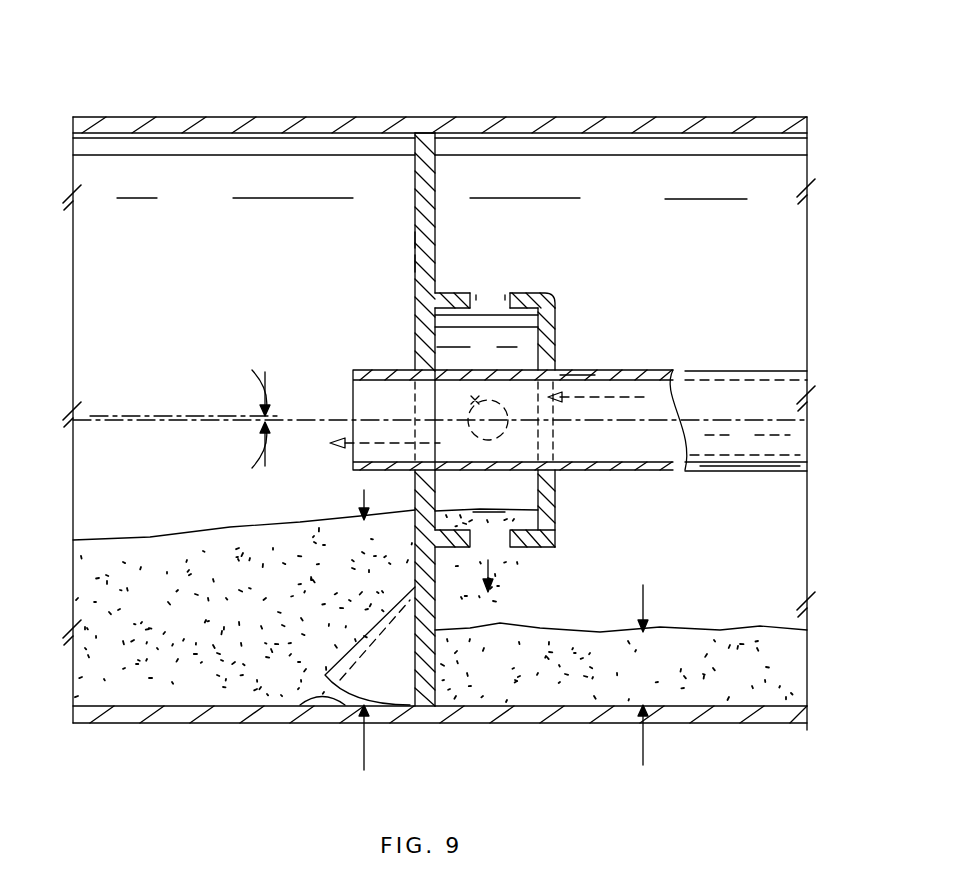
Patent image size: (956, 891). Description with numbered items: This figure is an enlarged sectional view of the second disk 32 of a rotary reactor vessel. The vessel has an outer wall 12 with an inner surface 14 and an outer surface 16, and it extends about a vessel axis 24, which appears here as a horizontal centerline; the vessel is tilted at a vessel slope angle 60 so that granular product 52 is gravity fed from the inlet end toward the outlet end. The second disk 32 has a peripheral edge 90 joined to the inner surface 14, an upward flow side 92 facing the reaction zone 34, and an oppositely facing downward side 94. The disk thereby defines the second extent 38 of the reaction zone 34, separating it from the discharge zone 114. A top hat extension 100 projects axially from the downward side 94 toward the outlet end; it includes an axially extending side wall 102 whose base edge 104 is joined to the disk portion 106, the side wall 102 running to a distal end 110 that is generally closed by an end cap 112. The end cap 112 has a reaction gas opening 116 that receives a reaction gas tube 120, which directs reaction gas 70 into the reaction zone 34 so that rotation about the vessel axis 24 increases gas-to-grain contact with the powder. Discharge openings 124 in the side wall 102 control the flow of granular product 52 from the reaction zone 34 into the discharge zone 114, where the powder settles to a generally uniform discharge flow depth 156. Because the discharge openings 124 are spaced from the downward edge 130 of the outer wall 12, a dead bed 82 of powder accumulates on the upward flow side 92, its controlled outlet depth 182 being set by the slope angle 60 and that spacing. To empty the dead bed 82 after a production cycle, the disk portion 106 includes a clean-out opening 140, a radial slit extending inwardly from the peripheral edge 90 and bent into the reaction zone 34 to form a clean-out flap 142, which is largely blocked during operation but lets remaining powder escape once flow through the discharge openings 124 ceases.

The outer wall 12 is at (650, 128).
The inner surface 14 is at (778, 136).
The outer surface 16 is at (604, 118).
The vessel axis 24 is at (760, 420).
The second disk 32 is at (412, 195).
The reaction zone 34 is at (160, 248).
The second extent 38 is at (403, 147).
The granular product 52 is at (125, 555).
The vessel slope angle 60 is at (258, 375).
The reaction gas 70 is at (640, 397).
The dead bed 82 is at (190, 640).
The peripheral edge 90 is at (427, 128).
The upward flow side 92 is at (413, 238).
The downward side 94 is at (435, 194).
The top hat extension 100 is at (548, 383).
The side wall 102 is at (531, 264).
The base edge 104 is at (436, 291).
The disk portion 106 is at (413, 263).
The distal end 110 is at (538, 293).
The end cap 112 is at (552, 333).
The discharge zone 114 is at (672, 236).
The reaction gas opening 116 is at (550, 372).
The reaction gas tube 120 is at (733, 447).
The discharge openings 124 is at (486, 292).
The downward edge 130 is at (320, 693).
The clean-out opening 140 is at (432, 683).
The clean-out flap 142 is at (440, 675).
The discharge flow depth 156 is at (645, 752).
The controlled outlet depth 182 is at (360, 755).